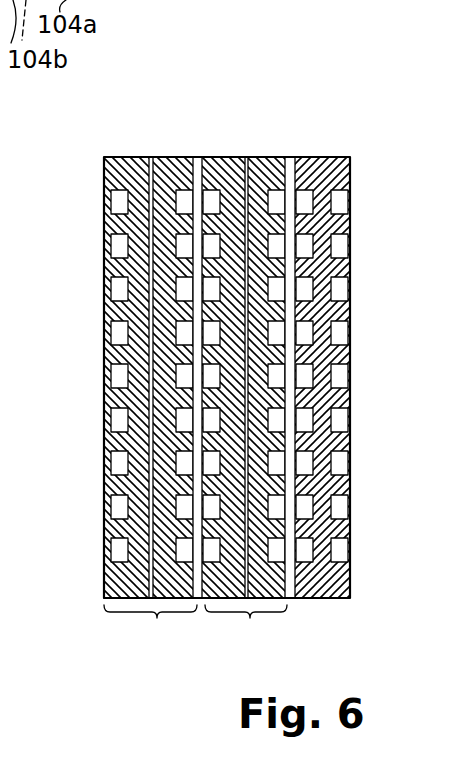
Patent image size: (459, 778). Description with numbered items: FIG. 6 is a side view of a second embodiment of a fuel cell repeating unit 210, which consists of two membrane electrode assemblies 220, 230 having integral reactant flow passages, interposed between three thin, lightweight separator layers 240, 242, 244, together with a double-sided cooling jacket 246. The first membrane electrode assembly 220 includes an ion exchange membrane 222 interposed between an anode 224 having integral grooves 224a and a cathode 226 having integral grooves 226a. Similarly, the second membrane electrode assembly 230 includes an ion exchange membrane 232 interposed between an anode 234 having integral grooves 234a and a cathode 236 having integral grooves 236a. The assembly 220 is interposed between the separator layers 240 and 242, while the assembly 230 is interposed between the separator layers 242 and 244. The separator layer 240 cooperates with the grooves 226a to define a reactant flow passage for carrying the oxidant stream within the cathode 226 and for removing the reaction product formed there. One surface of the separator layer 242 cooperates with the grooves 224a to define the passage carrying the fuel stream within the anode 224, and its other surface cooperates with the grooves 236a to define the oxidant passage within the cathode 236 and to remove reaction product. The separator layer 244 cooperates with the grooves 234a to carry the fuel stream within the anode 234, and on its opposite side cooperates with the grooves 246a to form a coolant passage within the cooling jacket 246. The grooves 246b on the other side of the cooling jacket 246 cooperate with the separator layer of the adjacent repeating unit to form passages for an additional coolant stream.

The fuel cell repeating unit 210 is at (352, 193).
The membrane electrode assembly 220 is at (150, 633).
The ion exchange membrane 222 is at (152, 157).
The anode 224 is at (178, 157).
The grooves 224a is at (165, 157).
The cathode 226 is at (117, 157).
The grooves 226a is at (140, 157).
The membrane electrode assembly 230 is at (246, 631).
The ion exchange membrane 232 is at (245, 157).
The anode 234 is at (265, 157).
The grooves 234a is at (280, 157).
The cathode 236 is at (221, 157).
The grooves 236a is at (235, 157).
The separator layer 240 is at (104, 598).
The separator layer 242 is at (202, 598).
The separator layer 244 is at (292, 598).
The double-sided cooling jacket 246 is at (350, 268).
The grooves 246a is at (333, 157).
The grooves 246b is at (340, 380).